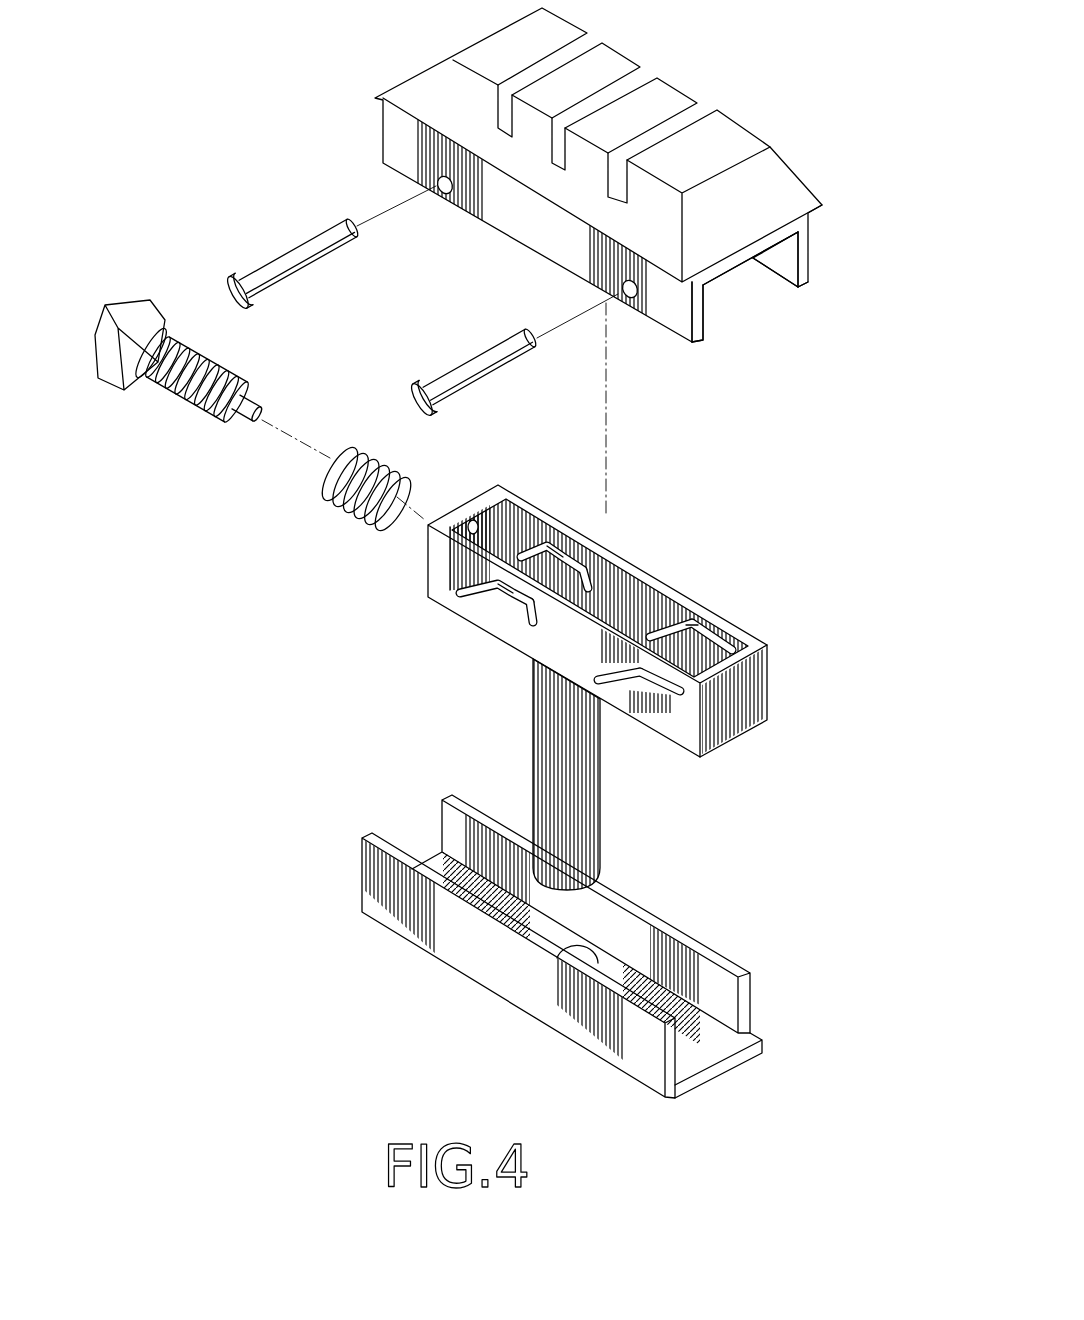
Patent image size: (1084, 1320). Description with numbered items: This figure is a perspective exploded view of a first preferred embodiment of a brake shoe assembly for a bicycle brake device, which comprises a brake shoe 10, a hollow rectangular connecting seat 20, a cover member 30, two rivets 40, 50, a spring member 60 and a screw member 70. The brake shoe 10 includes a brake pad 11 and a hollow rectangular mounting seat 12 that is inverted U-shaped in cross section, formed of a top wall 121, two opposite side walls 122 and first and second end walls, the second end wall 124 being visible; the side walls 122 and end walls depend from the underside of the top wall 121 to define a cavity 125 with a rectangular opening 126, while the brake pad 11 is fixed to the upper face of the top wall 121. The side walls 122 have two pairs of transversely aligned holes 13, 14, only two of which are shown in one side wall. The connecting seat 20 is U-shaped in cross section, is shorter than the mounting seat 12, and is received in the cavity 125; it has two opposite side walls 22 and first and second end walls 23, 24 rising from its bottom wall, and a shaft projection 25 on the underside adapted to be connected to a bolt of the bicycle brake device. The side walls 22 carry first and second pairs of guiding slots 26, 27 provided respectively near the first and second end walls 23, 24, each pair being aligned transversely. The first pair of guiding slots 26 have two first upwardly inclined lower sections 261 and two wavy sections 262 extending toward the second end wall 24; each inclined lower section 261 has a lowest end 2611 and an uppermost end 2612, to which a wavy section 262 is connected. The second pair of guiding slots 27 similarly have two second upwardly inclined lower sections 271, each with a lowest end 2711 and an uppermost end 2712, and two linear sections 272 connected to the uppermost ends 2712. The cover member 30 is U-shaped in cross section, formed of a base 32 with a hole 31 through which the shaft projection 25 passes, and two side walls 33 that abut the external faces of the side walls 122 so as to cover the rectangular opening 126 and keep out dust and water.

The brake shoe 10 is at (621, 232).
The brake pad 11 is at (790, 164).
The mounting seat 12 is at (754, 348).
The hole 13 is at (445, 193).
The hole 14 is at (626, 312).
The top wall 121 is at (758, 247).
The side walls 122 is at (670, 317).
The second end wall 124 is at (694, 343).
The cavity 125 is at (727, 297).
The rectangular opening 126 is at (793, 350).
The connecting seat 20 is at (618, 660).
The side walls 22 is at (672, 593).
The first end wall 23 is at (480, 513).
The second end wall 24 is at (763, 692).
The shaft projection 25 is at (600, 822).
The first pair of guiding slots 26 is at (493, 598).
The first upwardly inclined lower section 261 is at (533, 550).
The wavy section 262 is at (588, 553).
The lowest end 2611 is at (480, 604).
The uppermost end 2612 is at (500, 573).
The second pair of guiding slots 27 is at (716, 653).
The second upwardly inclined lower section 271 is at (677, 623).
The linear section 272 is at (733, 627).
The lowest end 2711 is at (600, 697).
The uppermost end 2712 is at (646, 633).
The cover member 30 is at (627, 946).
The hole 31 is at (580, 957).
The base 32 is at (708, 1048).
The side walls 33 is at (627, 923).
The rivet 40 is at (270, 251).
The rivet 50 is at (442, 369).
The spring member 60 is at (332, 497).
The screw member 70 is at (168, 300).